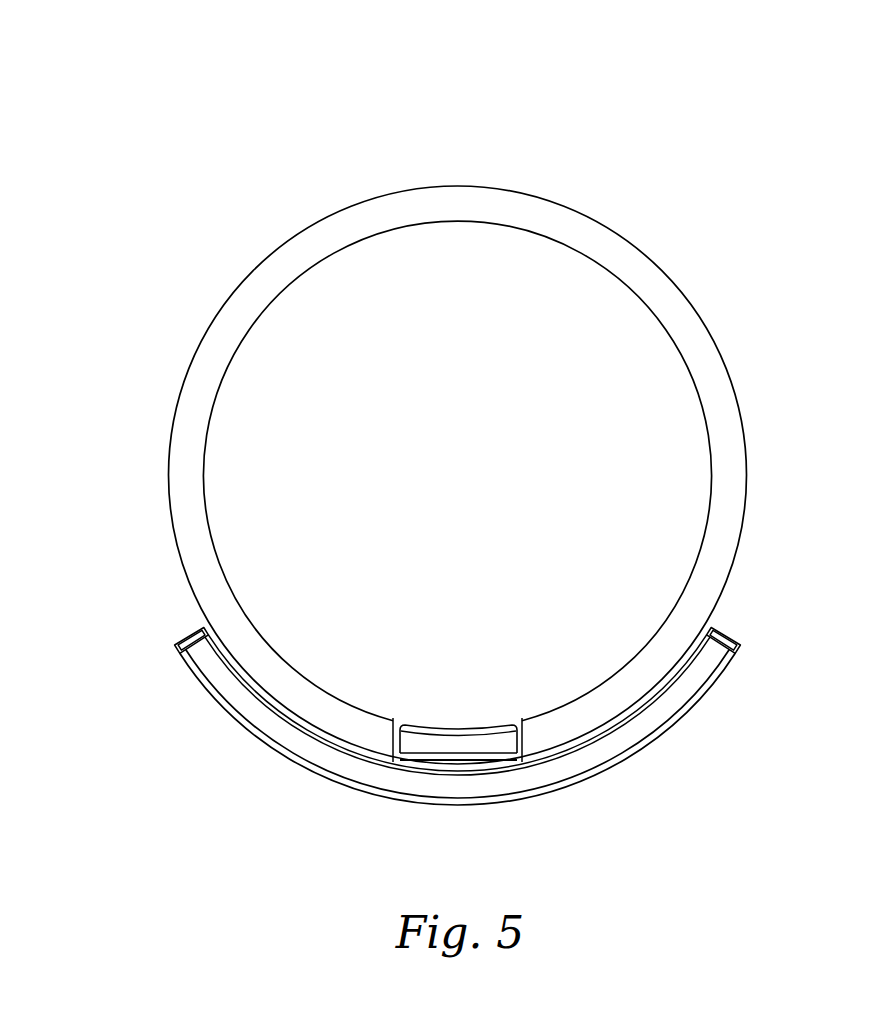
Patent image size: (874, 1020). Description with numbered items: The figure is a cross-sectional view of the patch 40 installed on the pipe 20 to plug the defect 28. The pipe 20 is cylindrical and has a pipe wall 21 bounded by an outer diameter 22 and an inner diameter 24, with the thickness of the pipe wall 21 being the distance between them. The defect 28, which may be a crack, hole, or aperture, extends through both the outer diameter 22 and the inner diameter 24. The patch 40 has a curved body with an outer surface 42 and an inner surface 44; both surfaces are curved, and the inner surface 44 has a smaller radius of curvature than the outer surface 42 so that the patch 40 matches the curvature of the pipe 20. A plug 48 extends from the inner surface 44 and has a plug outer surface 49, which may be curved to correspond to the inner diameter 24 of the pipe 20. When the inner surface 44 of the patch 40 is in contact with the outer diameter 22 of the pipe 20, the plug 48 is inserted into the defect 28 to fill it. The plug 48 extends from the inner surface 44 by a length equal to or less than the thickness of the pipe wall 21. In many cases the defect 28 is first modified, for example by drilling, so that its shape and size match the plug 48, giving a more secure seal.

The pipe 20 is at (278, 190).
The pipe wall 21 is at (723, 463).
The outer diameter 22 is at (682, 292).
The inner diameter 24 is at (683, 375).
The defect 28 is at (398, 705).
The patch 40 is at (265, 764).
The outer surface 42 is at (545, 798).
The inner surface 44 is at (607, 724).
The plug 48 is at (507, 743).
The plug outer surface 49 is at (453, 733).